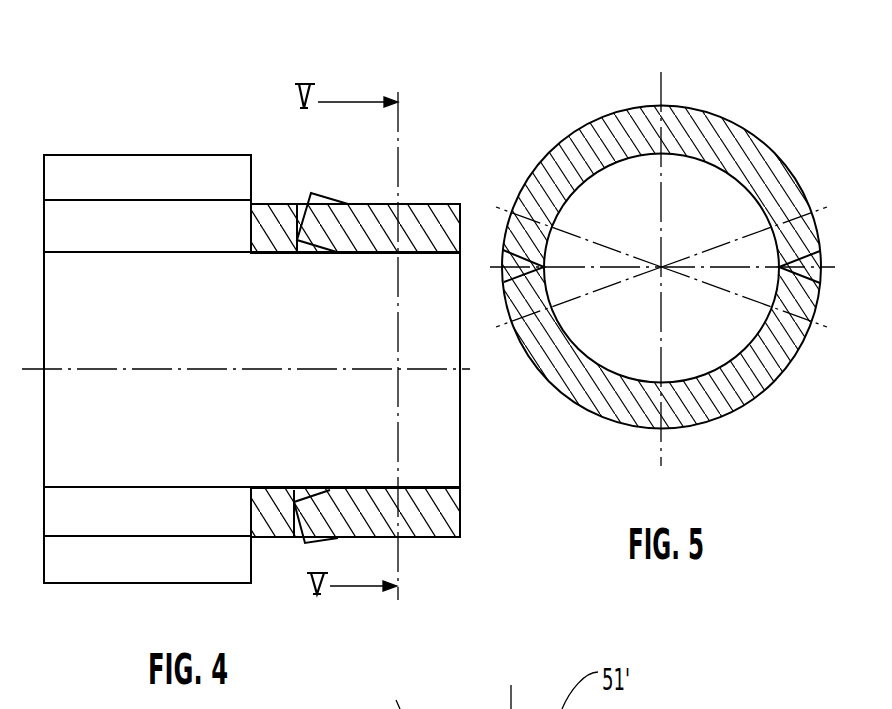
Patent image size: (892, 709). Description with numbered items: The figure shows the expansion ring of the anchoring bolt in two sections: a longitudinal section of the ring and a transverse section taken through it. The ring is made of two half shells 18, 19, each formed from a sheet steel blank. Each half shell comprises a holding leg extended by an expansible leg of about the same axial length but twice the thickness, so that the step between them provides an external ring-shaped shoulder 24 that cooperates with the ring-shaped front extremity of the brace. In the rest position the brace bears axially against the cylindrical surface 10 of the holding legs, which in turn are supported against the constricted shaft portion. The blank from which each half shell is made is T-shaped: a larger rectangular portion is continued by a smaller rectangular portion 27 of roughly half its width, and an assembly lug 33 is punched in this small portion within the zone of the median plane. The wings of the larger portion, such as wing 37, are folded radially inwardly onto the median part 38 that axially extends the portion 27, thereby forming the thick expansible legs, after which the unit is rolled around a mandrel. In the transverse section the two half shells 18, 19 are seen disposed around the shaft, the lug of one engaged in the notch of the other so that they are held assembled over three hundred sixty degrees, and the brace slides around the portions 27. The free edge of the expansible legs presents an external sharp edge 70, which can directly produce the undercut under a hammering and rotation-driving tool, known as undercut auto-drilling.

In FIG. 4, the cylindrical surface 10 is at (355, 373).
In FIG. 5, the cylindrical surface 10 is at (661, 272).
In FIG. 4, the half shell 18 is at (168, 331).
In FIG. 5, the half shell 18 is at (661, 254).
In FIG. 4, the half shell 19 is at (320, 378).
In FIG. 5, the half shell 19 is at (645, 442).
In FIG. 4, the external ring-shaped shoulder 24 is at (248, 557).
In FIG. 4, the smaller rectangular portion 27 is at (437, 227).
In FIG. 5, the smaller rectangular portion 27 is at (717, 137).
In FIG. 4, the assembly lug 33 is at (317, 218).
In FIG. 4, the wing 37 is at (150, 181).
In FIG. 4, the median part 38 is at (100, 218).
In FIG. 4, the external sharp edge 70 is at (44, 583).